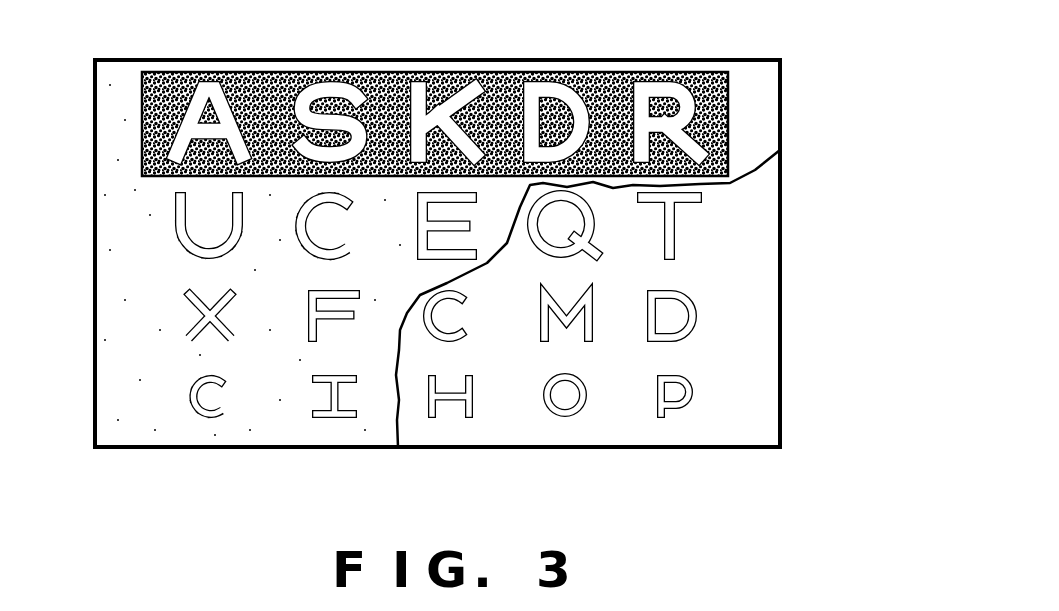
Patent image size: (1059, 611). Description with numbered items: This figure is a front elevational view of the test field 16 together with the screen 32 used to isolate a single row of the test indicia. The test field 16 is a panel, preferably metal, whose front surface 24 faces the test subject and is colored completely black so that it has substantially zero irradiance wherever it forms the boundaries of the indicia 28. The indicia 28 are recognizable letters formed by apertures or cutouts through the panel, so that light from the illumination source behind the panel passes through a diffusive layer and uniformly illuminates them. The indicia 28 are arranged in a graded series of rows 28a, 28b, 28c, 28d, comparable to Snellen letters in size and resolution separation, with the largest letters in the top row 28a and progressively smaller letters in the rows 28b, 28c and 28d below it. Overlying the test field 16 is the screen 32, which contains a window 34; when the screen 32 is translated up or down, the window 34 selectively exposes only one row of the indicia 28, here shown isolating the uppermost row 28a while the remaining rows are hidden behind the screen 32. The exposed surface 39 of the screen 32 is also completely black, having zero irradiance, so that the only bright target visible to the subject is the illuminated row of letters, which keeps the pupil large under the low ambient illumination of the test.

The test field 16 is at (533, 448).
The front surface 24 is at (692, 427).
The indicia 28 is at (513, 212).
The first row of indicia 28a is at (718, 115).
The second row of indicia 28b is at (695, 220).
The third row of indicia 28c is at (708, 310).
The fourth row of indicia 28d is at (700, 390).
The screen 32 is at (150, 272).
The window 34 is at (282, 70).
The exposed surface 39 is at (132, 220).